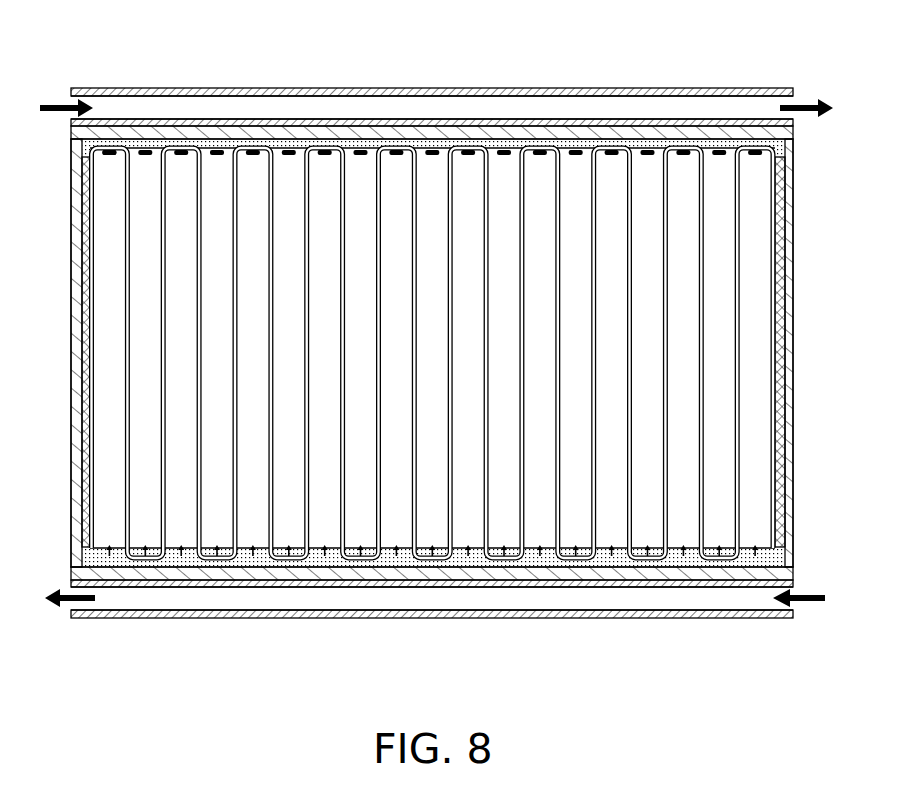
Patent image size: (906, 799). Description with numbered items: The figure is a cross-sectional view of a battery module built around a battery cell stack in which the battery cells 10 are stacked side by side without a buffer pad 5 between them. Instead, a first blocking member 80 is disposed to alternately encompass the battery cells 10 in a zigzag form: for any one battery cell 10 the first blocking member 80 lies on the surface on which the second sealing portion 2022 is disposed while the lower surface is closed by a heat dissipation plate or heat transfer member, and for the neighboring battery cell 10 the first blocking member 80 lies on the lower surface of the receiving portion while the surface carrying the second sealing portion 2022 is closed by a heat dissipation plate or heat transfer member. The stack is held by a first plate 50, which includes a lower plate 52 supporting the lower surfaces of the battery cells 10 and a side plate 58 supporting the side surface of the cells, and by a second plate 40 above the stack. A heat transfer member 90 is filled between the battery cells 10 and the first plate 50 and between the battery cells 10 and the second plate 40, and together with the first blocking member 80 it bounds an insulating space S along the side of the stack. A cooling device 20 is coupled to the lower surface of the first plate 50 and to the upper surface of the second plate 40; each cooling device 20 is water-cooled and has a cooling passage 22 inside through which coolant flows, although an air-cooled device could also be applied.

The buffer pad 5 is at (782, 448).
The battery cell 10 is at (725, 343).
The cooling device 20 is at (243, 88).
The cooling passage 22 is at (387, 107).
The second plate 40 is at (513, 128).
The first plate 50 is at (456, 433).
The lower plate 52 is at (735, 578).
The side plate 58 is at (787, 507).
The first blocking member 80 is at (740, 225).
The heat transfer member 90 is at (463, 560).
The second sealing portion 2022 is at (115, 152).
The insulating space S is at (86, 322).